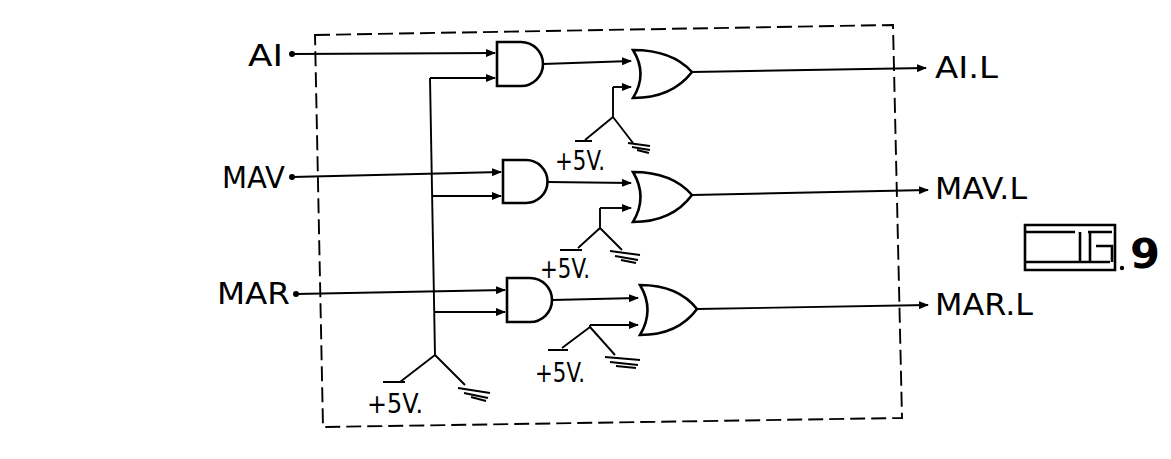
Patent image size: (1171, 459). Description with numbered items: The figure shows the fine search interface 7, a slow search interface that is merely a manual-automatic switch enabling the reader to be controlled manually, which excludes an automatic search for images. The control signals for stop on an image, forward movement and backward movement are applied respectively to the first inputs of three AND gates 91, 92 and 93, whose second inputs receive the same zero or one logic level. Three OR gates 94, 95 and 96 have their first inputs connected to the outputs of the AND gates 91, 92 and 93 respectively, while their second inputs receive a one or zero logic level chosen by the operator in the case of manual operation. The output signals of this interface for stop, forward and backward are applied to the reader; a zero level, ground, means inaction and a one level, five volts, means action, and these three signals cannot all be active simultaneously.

The fine search interface 7 is at (902, 378).
The AND gate 91 is at (508, 86).
The AND gate 92 is at (517, 203).
The AND gate 93 is at (515, 322).
The OR gate 94 is at (676, 95).
The OR gate 95 is at (675, 212).
The OR gate 96 is at (683, 330).